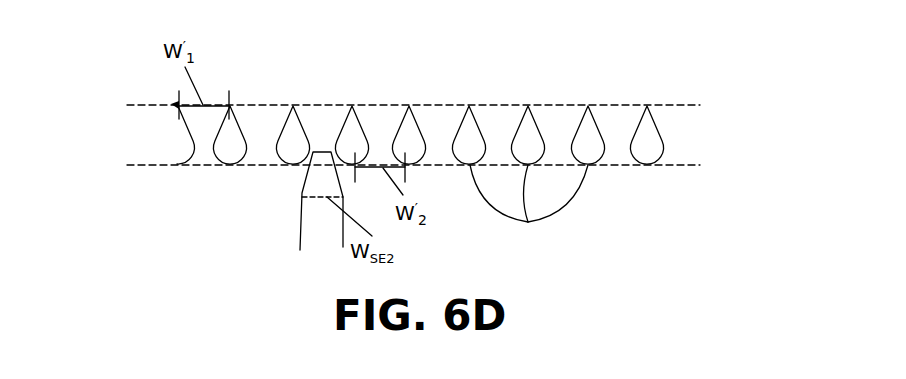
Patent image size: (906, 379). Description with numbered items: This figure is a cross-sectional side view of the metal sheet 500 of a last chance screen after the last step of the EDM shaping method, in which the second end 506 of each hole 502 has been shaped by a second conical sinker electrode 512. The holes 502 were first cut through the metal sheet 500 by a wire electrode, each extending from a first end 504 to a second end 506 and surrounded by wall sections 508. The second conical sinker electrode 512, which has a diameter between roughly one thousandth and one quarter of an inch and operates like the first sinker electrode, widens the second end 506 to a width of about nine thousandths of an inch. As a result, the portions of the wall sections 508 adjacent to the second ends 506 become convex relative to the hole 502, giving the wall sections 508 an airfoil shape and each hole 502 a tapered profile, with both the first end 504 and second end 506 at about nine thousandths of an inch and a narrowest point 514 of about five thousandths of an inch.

The metal sheet 500 is at (509, 84).
The holes 502 is at (447, 107).
The first end 504 is at (272, 92).
The second end 506 is at (256, 174).
The wall sections 508 is at (537, 178).
The second conical sinker electrode 512 is at (293, 212).
The narrowest point 514 is at (651, 153).